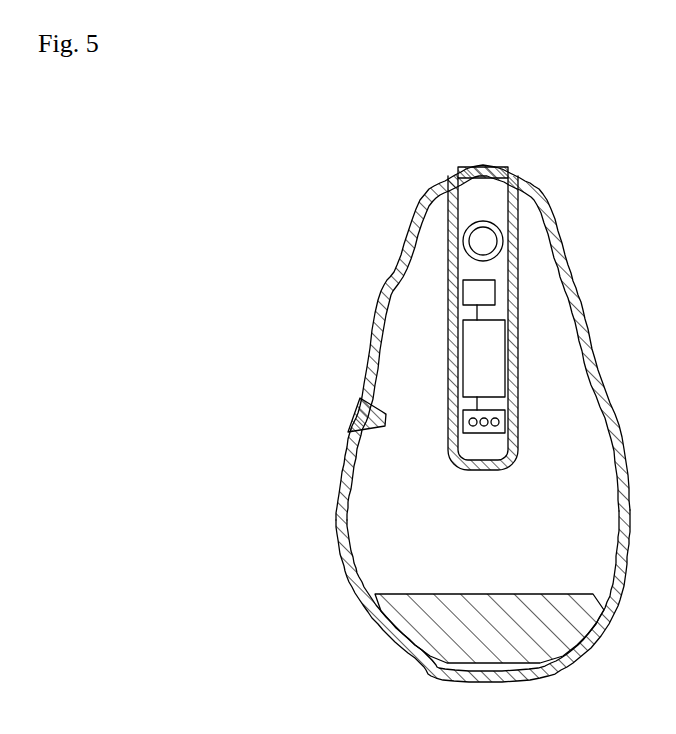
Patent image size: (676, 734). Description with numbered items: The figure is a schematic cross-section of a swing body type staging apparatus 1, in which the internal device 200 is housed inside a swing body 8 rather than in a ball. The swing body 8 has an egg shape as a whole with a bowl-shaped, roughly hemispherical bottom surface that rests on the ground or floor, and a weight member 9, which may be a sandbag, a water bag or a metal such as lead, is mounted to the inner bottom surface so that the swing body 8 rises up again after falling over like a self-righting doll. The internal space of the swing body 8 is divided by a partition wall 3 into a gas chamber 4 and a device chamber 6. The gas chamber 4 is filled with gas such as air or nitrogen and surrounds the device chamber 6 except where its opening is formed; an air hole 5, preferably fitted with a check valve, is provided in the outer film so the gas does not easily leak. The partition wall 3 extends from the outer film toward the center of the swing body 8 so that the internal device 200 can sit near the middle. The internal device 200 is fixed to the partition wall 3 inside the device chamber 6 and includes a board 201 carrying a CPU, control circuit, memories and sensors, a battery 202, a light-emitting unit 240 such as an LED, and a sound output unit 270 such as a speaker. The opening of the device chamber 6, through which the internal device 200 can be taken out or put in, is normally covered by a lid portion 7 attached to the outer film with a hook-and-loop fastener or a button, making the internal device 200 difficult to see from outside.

The staging apparatus 1 is at (369, 205).
The partition wall 3 is at (450, 362).
The gas chamber 4 is at (376, 505).
The air hole 5 is at (355, 410).
The device chamber 6 is at (492, 210).
The lid portion 7 is at (485, 163).
The swing body 8 is at (378, 300).
The weight member 9 is at (437, 592).
The internal device 200 is at (529, 391).
The board 201 is at (495, 360).
The battery 202 is at (490, 292).
The light-emitting unit 240 is at (494, 434).
The sound output unit 270 is at (503, 241).